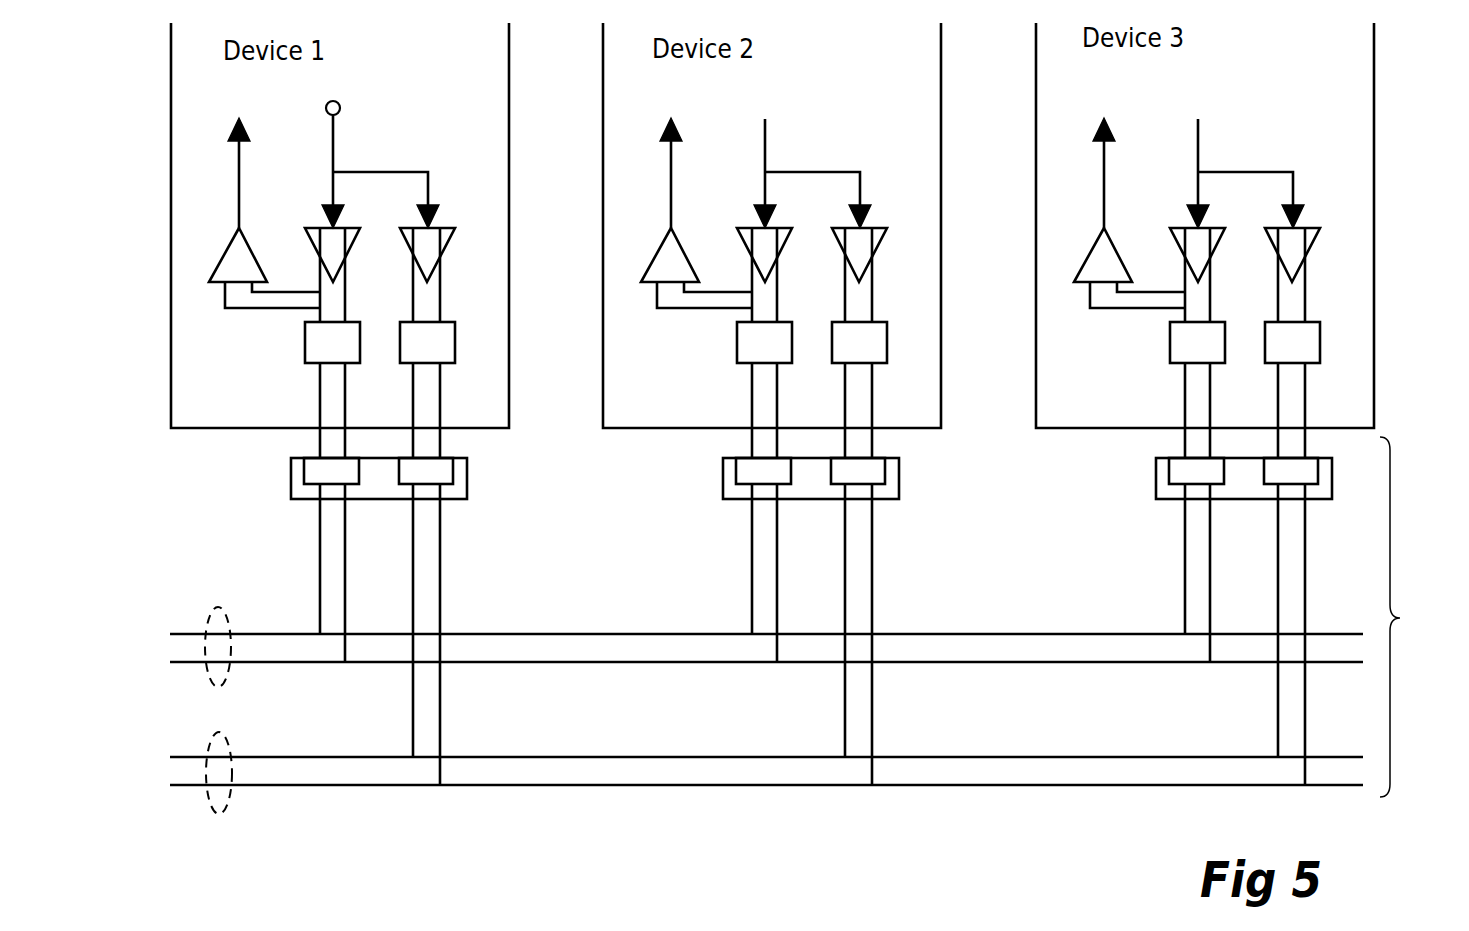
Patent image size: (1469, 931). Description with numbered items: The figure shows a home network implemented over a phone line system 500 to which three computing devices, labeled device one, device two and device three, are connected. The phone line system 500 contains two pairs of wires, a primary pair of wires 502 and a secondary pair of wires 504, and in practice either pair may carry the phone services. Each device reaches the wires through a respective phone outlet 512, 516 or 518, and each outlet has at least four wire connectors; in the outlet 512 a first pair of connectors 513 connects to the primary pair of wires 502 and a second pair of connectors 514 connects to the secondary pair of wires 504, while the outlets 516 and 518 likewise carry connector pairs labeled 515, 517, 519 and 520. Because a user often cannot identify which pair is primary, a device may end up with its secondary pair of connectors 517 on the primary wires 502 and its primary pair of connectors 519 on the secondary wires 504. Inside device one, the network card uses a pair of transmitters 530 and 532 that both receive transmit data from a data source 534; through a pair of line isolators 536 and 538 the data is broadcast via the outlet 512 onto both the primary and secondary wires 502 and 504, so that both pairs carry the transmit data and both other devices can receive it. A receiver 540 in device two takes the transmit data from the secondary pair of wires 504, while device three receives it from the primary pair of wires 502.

The phone line system 500 is at (812, 617).
The primary pair of wires 502 is at (221, 600).
The secondary pair of wires 504 is at (213, 805).
The phone outlet 512 is at (457, 492).
The first pair of connectors 513 is at (313, 472).
The second pair of connectors 514 is at (447, 472).
The first bus tap of device 2 515 is at (717, 471).
The phone outlet 516 is at (851, 497).
The secondary pair of connectors 517 is at (915, 468).
The phone outlet 518 is at (1227, 508).
The primary pair of connectors 519 is at (1149, 472).
The second bus tap of device 3 520 is at (1314, 504).
The transmitter 530 is at (325, 240).
The transmitter 532 is at (438, 240).
The data source 534 is at (380, 155).
The line isolator 536 is at (310, 353).
The line isolator 538 is at (442, 352).
The receiver 540 is at (686, 213).